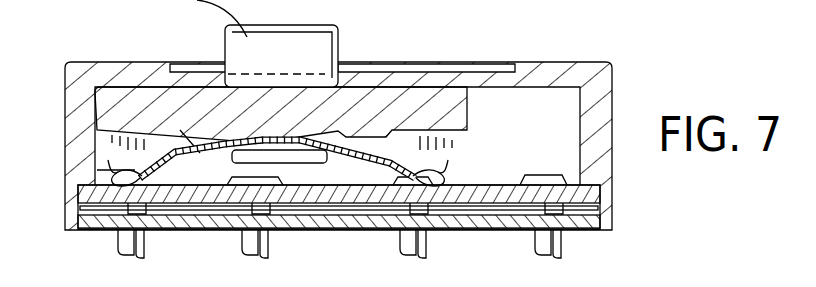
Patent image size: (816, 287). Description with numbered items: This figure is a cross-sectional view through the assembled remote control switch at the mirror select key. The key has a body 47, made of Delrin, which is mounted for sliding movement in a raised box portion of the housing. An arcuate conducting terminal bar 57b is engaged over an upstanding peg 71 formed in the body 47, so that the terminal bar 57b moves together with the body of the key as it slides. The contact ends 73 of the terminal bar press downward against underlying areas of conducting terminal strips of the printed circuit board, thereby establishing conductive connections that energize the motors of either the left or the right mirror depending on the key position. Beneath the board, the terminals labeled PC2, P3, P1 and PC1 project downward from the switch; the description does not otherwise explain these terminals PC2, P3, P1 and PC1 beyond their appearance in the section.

The body portion 47 is at (432, 98).
The conducting terminal bar 57b is at (391, 132).
The upstanding peg 71 is at (290, 145).
The contact end 73 is at (120, 162).
The terminal pin PC2 is at (116, 242).
The terminal pin P3 is at (242, 243).
The terminal pin P1 is at (430, 243).
The terminal pin PC1 is at (565, 242).